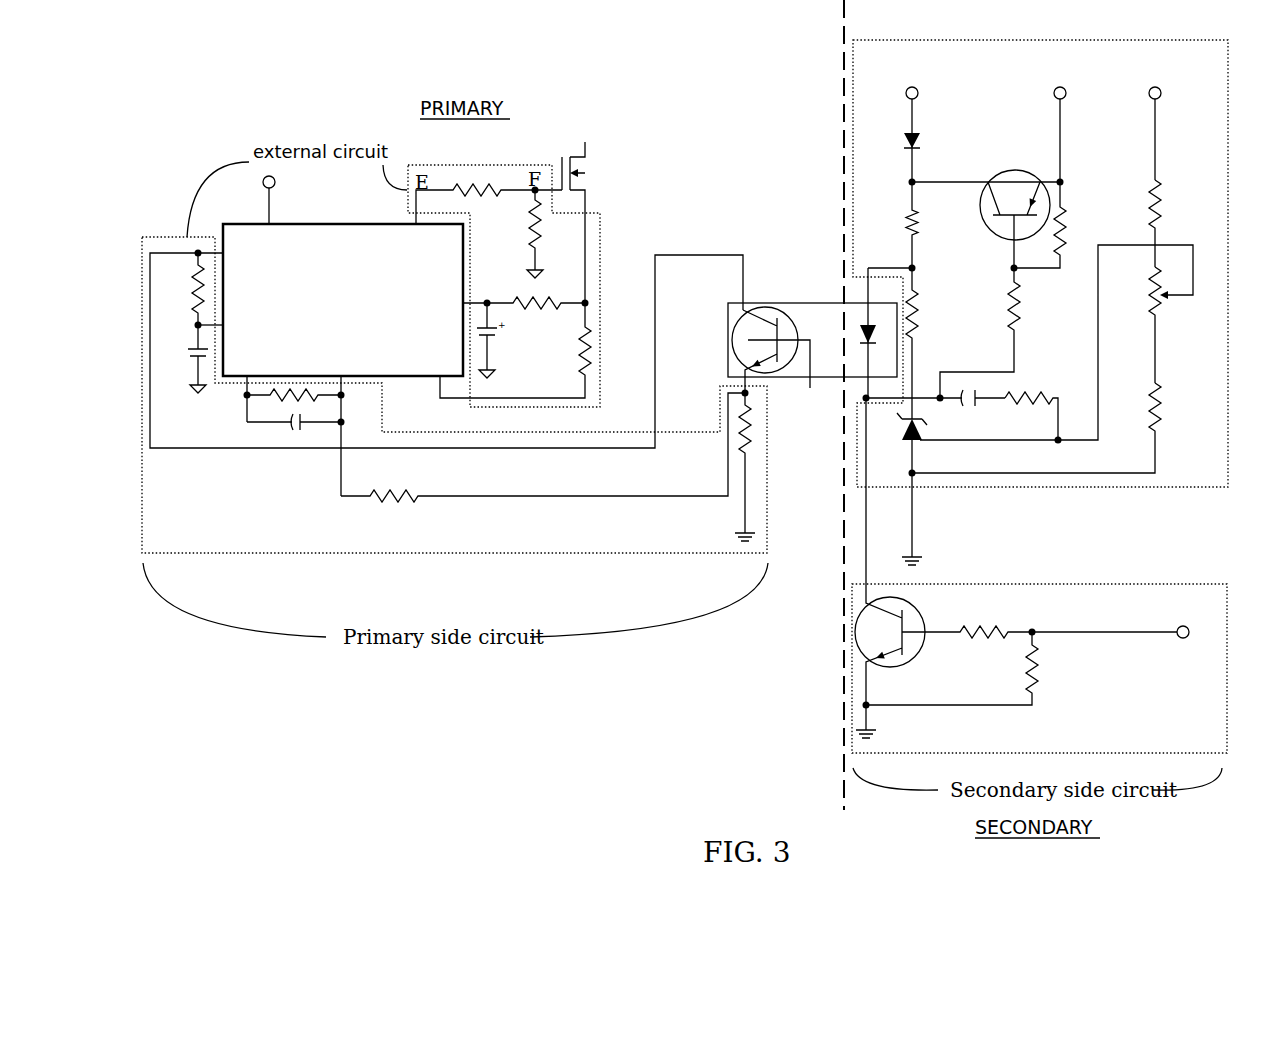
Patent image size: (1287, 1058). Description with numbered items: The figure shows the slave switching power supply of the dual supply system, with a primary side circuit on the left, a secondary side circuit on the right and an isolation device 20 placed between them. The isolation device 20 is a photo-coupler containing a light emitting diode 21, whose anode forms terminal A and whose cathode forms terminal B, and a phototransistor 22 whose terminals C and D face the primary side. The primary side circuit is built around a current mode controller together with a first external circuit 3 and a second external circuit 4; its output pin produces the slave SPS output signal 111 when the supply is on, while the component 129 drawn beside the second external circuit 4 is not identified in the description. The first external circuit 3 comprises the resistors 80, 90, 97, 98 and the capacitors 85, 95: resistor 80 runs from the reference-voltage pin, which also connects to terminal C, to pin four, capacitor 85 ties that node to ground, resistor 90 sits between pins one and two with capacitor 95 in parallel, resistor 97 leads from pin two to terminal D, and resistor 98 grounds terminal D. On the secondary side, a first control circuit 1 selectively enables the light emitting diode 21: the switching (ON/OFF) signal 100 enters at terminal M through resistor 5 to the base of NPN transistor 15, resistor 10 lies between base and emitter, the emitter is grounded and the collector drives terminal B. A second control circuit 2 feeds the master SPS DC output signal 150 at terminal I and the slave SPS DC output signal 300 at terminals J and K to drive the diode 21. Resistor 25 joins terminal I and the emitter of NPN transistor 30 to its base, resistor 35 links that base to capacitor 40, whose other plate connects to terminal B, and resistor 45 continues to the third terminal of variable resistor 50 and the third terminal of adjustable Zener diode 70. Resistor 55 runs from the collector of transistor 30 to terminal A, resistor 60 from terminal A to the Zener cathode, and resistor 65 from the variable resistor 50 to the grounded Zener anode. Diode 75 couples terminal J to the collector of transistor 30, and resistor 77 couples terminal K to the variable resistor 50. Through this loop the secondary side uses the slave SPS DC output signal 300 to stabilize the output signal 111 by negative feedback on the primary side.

The first control circuit 1 is at (1003, 585).
The second control circuit 2 is at (978, 488).
The first external circuit 3 is at (198, 552).
The second external circuit 4 is at (602, 272).
The resistor 5 is at (967, 621).
The resistor 10 is at (952, 668).
The NPN transistor 15 is at (915, 604).
The isolation device 20 is at (792, 330).
The light emitting diode 21 is at (855, 330).
The phototransistor 22 is at (748, 340).
The resistor 25 is at (1060, 225).
The NPN transistor 30 is at (1026, 170).
The resistor 35 is at (997, 333).
The capacitor 40 is at (935, 417).
The resistor 45 is at (1031, 416).
The variable resistor 50 is at (1141, 325).
The resistor 55 is at (930, 225).
The resistor 60 is at (926, 333).
The resistor 65 is at (1141, 428).
The adjustable Zener diode 70 is at (900, 481).
The diode 75 is at (930, 155).
The resistor 77 is at (1140, 223).
The resistor 80 is at (181, 289).
The capacitor 85 is at (187, 359).
The resistor 90 is at (294, 388).
The capacitor 95 is at (294, 428).
The resistor 97 is at (543, 447).
The resistor 98 is at (752, 467).
The switching (ON/OFF) signal 100 is at (1132, 657).
The slave SPS output signal 111 is at (408, 215).
The switching MOSFET 129 is at (595, 222).
The master SPS DC output signal 150 is at (1044, 89).
The slave SPS DC output signal 300 is at (1078, 79).